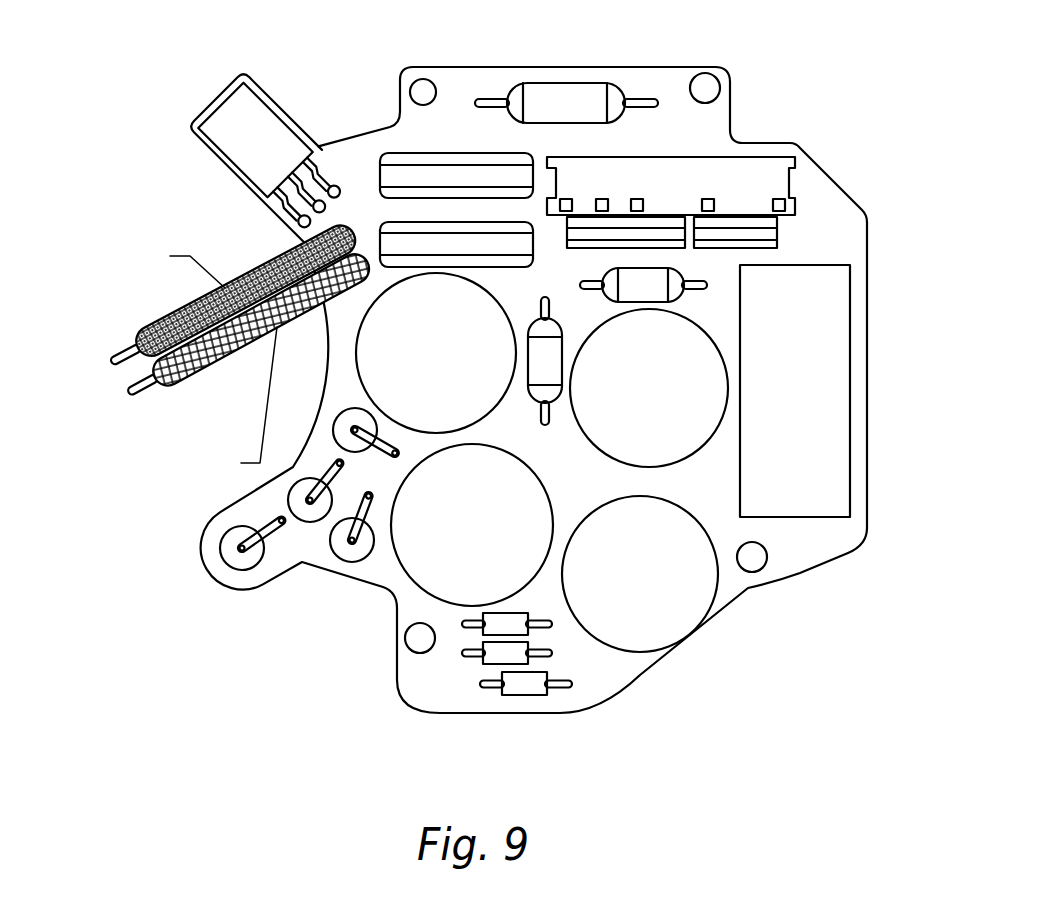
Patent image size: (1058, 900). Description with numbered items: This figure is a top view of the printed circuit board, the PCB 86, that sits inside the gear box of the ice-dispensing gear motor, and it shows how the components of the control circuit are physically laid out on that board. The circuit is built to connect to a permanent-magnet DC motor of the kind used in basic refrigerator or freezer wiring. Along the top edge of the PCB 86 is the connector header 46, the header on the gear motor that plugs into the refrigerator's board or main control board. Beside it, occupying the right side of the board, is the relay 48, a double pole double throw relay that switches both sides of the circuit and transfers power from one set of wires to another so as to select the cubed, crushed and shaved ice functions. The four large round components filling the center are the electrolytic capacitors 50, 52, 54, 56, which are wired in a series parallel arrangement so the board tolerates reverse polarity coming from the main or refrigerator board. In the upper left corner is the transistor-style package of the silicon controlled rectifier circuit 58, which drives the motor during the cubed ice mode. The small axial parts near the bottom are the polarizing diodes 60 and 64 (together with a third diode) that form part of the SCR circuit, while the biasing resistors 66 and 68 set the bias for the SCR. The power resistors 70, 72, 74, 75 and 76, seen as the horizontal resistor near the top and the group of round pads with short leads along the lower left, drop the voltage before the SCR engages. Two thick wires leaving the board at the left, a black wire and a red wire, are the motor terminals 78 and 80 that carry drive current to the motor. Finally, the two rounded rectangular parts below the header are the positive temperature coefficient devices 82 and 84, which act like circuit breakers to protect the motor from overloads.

The connector J1 46 is at (750, 157).
The relay K1 48 is at (852, 330).
The electrolytic capacitor C1 50 is at (487, 399).
The electrolytic capacitor C2 52 is at (691, 442).
The electrolytic capacitor C3 54 is at (514, 577).
The electrolytic capacitor C4 56 is at (682, 629).
The Silicon Controlled Rectifier circuit Q1 58 is at (257, 107).
The polarizing diode D1 60 is at (552, 625).
The polarizing diode D3 64 is at (535, 698).
The biasing resistor R6 66 is at (605, 283).
The biasing resistor R7 68 is at (553, 404).
The power resistor R1 70 is at (557, 83).
The power resistor R2 72 is at (333, 425).
The power resistor R3 74 is at (307, 523).
The power resistor R4 75 is at (230, 572).
The power resistor R5 76 is at (347, 562).
The motor terminal J2 (W1) 78 is at (250, 272).
The motor terminal J3 (W2) 80 is at (238, 347).
The Positive Temperature Coefficient 1 (PTC1) 82 is at (433, 153).
The Positive Temperature Coefficient 2 (PTC2) 84 is at (433, 222).
The PCB 86 is at (760, 640).